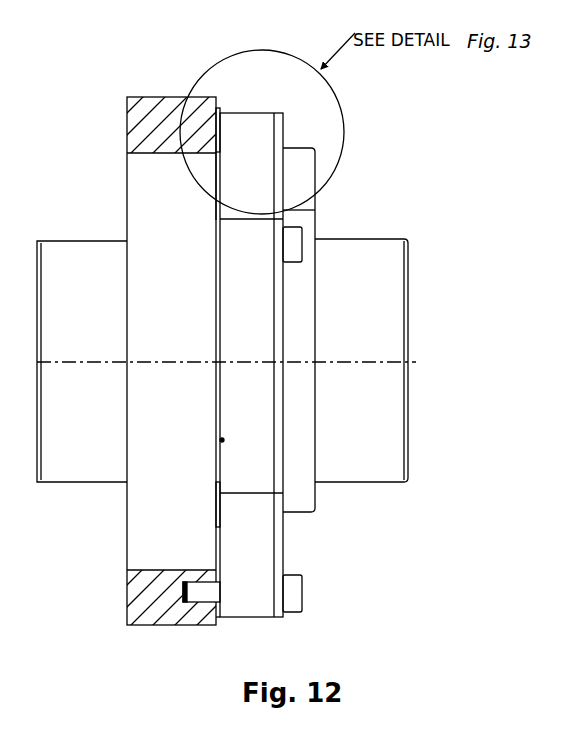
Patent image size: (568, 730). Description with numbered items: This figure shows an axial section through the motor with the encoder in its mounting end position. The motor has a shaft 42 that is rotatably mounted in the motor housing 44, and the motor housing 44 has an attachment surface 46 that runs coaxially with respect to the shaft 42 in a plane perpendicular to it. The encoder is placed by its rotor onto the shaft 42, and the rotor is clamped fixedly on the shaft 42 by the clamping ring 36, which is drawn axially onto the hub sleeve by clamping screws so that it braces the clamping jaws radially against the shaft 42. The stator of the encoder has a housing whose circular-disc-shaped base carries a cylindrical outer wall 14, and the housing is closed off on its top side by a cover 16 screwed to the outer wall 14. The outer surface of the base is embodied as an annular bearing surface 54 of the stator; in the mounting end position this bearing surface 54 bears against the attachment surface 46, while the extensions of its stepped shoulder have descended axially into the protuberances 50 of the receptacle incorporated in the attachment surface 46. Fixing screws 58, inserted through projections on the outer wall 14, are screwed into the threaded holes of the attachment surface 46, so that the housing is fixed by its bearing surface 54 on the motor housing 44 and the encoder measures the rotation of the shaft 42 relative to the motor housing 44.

The outer wall 14 is at (258, 532).
The cover 16 is at (283, 558).
The clamping ring 36 is at (300, 295).
The shaft 42 is at (390, 423).
The motor housing 44 is at (142, 603).
The attachment surface 46 is at (223, 619).
The protuberances 50 is at (219, 110).
The bearing surface 54 is at (222, 440).
The fixing screws 58 is at (213, 593).